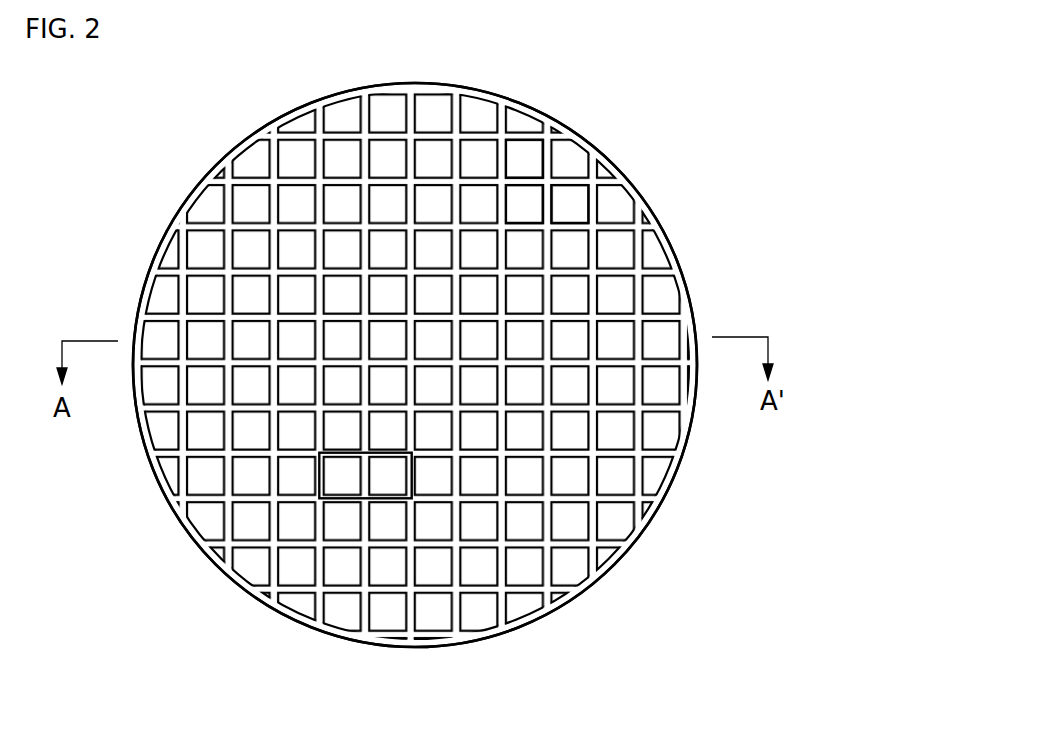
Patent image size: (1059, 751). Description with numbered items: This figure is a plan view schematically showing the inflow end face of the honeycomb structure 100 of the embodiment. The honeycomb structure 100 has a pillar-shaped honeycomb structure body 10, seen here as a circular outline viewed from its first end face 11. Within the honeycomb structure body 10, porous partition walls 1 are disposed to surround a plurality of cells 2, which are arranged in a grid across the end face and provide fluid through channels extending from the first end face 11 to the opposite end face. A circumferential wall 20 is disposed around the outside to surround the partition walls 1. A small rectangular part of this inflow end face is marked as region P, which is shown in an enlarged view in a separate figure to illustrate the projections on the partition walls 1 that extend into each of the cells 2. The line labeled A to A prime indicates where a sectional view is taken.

The honeycomb structure 100 is at (760, 45).
The honeycomb structure body 10 is at (703, 305).
The first end face 11 is at (213, 142).
The circumferential wall 20 is at (635, 532).
The partition walls 1 is at (518, 180).
The cells 2 is at (568, 200).
The region P is at (319, 485).